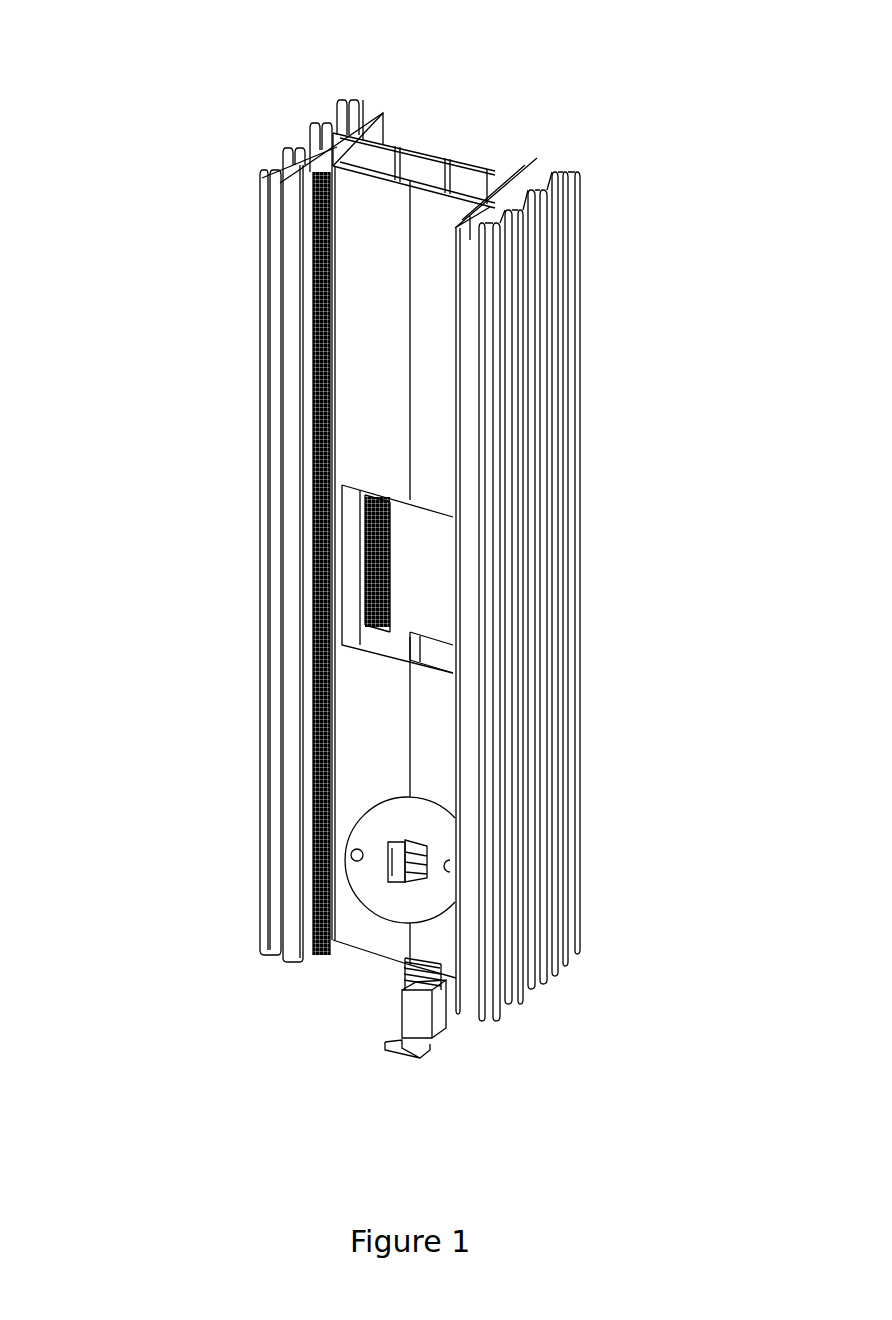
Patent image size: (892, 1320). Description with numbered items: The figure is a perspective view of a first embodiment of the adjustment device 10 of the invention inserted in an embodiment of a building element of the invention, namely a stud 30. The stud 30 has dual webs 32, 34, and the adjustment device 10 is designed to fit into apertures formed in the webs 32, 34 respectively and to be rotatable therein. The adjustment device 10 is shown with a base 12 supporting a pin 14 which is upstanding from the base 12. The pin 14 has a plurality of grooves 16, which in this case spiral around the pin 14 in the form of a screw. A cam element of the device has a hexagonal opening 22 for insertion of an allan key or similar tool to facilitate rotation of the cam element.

The stud 30 is at (404, 537).
The web 32 is at (393, 147).
The web 34 is at (457, 212).
The adjustment device 10 is at (362, 823).
The grooves 16 is at (390, 863).
The hexagonal opening 22 is at (415, 848).
The pin 14 is at (405, 966).
The base 12 is at (400, 1030).